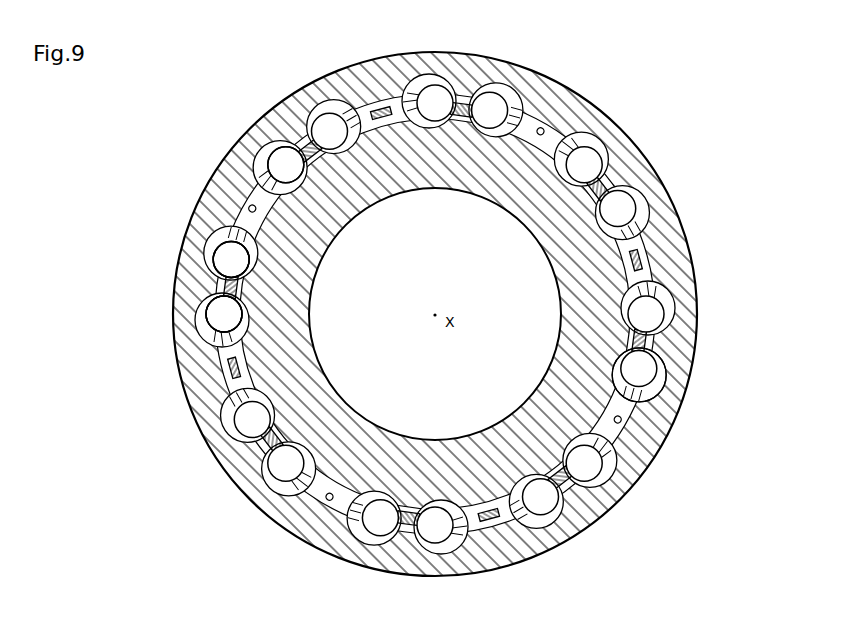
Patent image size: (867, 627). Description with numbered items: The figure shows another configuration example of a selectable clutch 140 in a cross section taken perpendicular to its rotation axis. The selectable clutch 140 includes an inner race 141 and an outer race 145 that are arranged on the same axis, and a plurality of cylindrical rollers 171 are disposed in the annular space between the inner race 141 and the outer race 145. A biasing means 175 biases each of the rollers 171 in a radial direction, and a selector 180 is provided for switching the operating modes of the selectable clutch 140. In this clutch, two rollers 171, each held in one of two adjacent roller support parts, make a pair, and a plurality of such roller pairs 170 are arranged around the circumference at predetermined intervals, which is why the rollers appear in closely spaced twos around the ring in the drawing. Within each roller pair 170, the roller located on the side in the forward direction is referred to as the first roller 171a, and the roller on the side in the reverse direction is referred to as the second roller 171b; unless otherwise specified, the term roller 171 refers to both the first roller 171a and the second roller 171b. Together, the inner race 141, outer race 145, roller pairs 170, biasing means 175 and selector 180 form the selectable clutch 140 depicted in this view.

The selectable clutch 140 is at (643, 148).
The inner race 141 is at (612, 272).
The outer race 145 is at (652, 440).
The roller pair 170 is at (82, 208).
The roller 171 is at (273, 156).
The first roller 171a is at (217, 315).
The second roller 171b is at (223, 260).
The biasing means 175 is at (653, 392).
The selector 180 is at (260, 458).